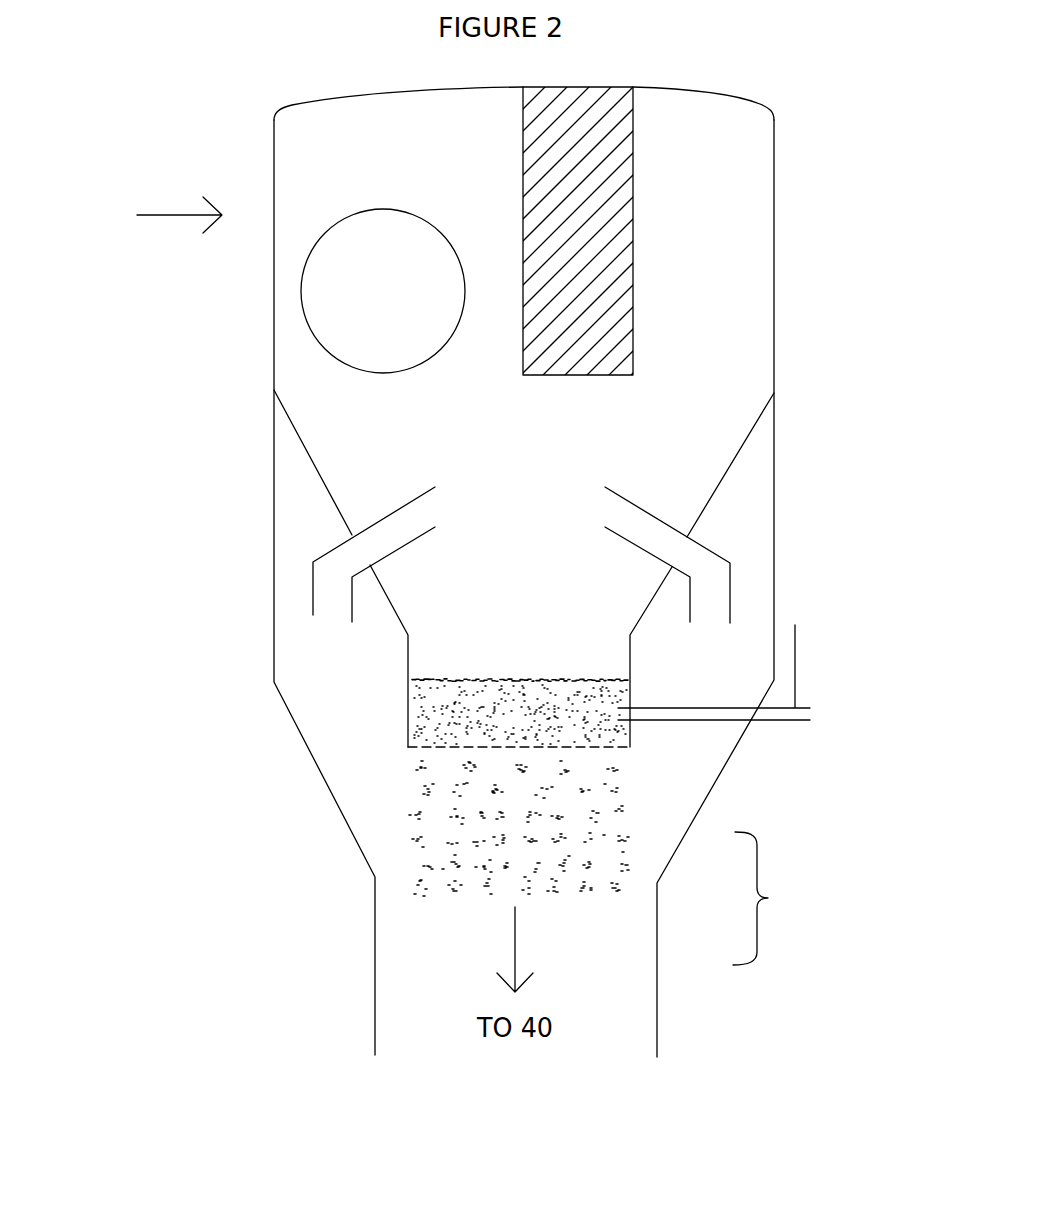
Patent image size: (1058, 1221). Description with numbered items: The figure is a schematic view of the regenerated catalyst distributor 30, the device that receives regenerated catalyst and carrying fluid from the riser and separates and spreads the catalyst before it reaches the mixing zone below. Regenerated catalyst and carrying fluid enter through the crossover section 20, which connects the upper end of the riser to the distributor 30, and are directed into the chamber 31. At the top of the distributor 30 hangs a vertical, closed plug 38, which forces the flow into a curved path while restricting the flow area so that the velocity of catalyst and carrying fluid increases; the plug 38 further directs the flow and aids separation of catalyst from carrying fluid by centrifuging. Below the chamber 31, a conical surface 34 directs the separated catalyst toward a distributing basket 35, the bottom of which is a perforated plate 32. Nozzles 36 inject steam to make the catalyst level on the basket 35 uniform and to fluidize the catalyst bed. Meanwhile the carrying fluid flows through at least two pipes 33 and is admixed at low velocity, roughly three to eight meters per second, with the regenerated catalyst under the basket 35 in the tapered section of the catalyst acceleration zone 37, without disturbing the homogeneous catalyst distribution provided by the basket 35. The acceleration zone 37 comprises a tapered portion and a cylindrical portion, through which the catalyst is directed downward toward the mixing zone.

The crossover section 20 is at (350, 290).
The regenerated catalyst distributor 30 is at (147, 215).
The chamber 31 is at (715, 273).
The perforated plate 32 is at (472, 747).
The pipes 33 is at (353, 540).
The conical surface 34 is at (307, 452).
The distributing basket 35 is at (408, 690).
The nozzles 36 is at (727, 656).
The catalyst acceleration zone 37 is at (790, 898).
The vertical closed plug 38 is at (605, 224).